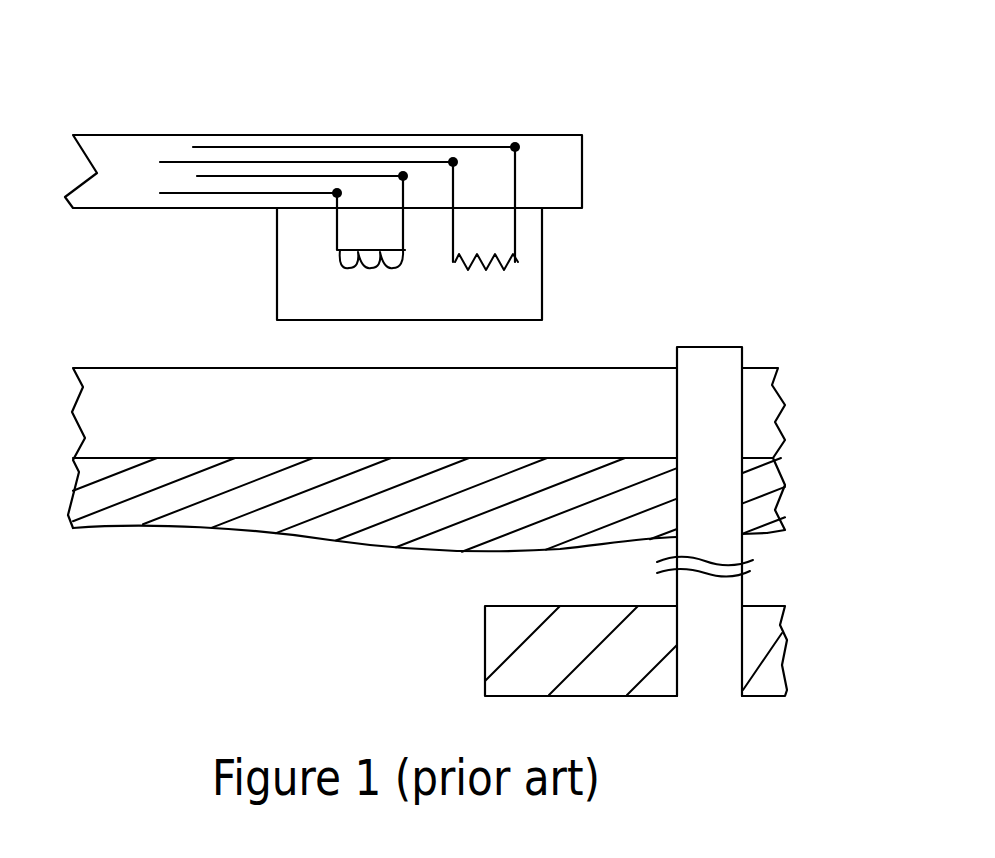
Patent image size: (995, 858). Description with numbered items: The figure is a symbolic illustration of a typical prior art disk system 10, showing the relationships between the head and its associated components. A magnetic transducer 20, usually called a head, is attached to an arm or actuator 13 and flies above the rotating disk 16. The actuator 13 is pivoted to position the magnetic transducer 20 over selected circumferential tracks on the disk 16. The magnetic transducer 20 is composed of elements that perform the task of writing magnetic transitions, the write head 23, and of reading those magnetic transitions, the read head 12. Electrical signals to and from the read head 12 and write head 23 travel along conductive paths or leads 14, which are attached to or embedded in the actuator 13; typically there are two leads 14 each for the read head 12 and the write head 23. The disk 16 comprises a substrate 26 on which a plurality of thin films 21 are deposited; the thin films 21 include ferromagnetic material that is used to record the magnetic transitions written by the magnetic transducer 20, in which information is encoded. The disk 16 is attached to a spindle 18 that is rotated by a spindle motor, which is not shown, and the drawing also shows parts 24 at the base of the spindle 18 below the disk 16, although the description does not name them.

The disk system 10 is at (152, 77).
The read head 12 is at (534, 265).
The actuator 13 is at (568, 180).
The leads 14 is at (463, 183).
The disk 16 is at (97, 340).
The spindle 18 is at (727, 362).
The magnetic transducer 20 is at (549, 312).
The thin films 21 is at (528, 424).
The write head 23 is at (333, 262).
The disk clamp 24 is at (503, 657).
The substrate 26 is at (122, 512).